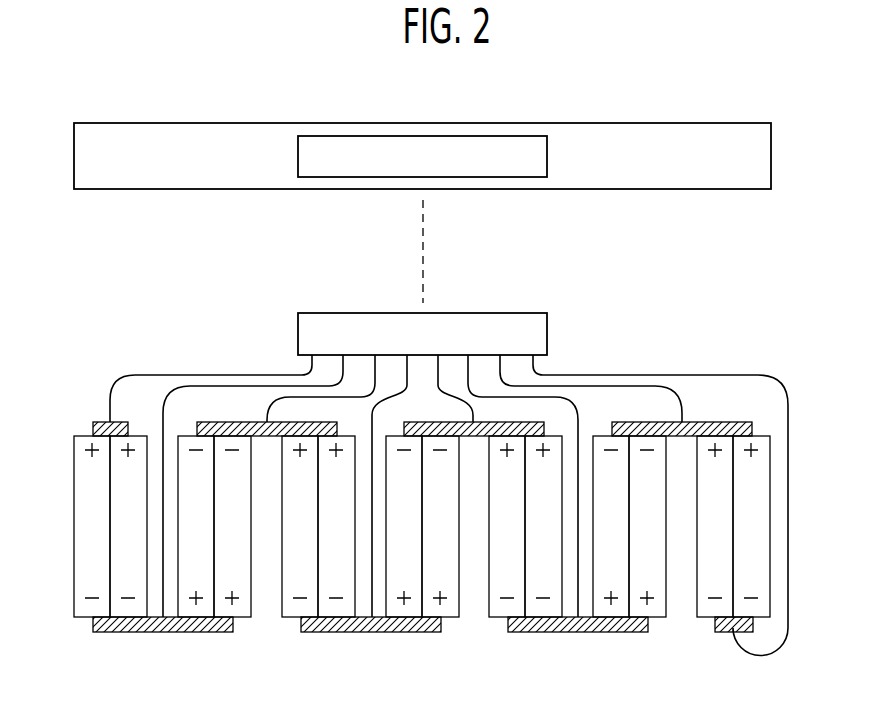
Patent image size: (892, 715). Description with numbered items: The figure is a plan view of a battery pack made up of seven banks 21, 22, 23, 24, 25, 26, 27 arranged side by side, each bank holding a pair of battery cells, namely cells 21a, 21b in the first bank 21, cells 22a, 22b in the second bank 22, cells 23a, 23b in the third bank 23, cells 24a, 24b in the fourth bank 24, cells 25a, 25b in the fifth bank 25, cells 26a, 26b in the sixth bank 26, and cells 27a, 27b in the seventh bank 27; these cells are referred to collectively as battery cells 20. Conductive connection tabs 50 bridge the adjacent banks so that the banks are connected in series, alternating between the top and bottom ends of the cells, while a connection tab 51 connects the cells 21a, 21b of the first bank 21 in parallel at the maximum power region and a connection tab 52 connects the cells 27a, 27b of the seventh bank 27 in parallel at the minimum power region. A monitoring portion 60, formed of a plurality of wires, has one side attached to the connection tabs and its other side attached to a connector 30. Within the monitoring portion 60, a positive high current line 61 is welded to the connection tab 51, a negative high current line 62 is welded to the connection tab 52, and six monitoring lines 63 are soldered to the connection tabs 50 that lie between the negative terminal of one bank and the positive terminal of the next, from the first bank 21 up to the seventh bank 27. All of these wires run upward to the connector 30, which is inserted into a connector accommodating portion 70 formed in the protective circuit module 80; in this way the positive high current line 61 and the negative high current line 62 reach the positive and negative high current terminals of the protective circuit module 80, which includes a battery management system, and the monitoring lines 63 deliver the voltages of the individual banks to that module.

The battery cells 20 is at (74, 572).
The first bank 21 is at (110, 526).
The battery cell 21a is at (92, 526).
The battery cell 21b is at (128, 526).
The second bank 22 is at (214, 526).
The battery cell 22a is at (196, 526).
The battery cell 22b is at (232, 526).
The third bank 23 is at (318, 526).
The battery cell 23a is at (300, 526).
The battery cell 23b is at (336, 526).
The fourth bank 24 is at (422, 526).
The battery cell 24a is at (404, 526).
The battery cell 24b is at (440, 526).
The fifth bank 25 is at (525, 526).
The battery cell 25a is at (507, 526).
The battery cell 25b is at (543, 526).
The sixth bank 26 is at (629, 526).
The battery cell 26a is at (611, 526).
The battery cell 26b is at (647, 526).
The seventh bank 27 is at (733, 526).
The battery cell 27a is at (715, 526).
The battery cell 27b is at (751, 526).
The connector 30 is at (547, 332).
The connection tab 50 is at (320, 633).
The connection tab 51 is at (96, 422).
The connection tab 52 is at (724, 632).
The monitoring portion 60 is at (623, 272).
The B+ high current line 61 is at (172, 375).
The B− high current line 62 is at (640, 375).
The monitoring line 63 is at (285, 397).
The connector accommodating portion 70 is at (500, 177).
The protective circuit module 80 is at (453, 163).